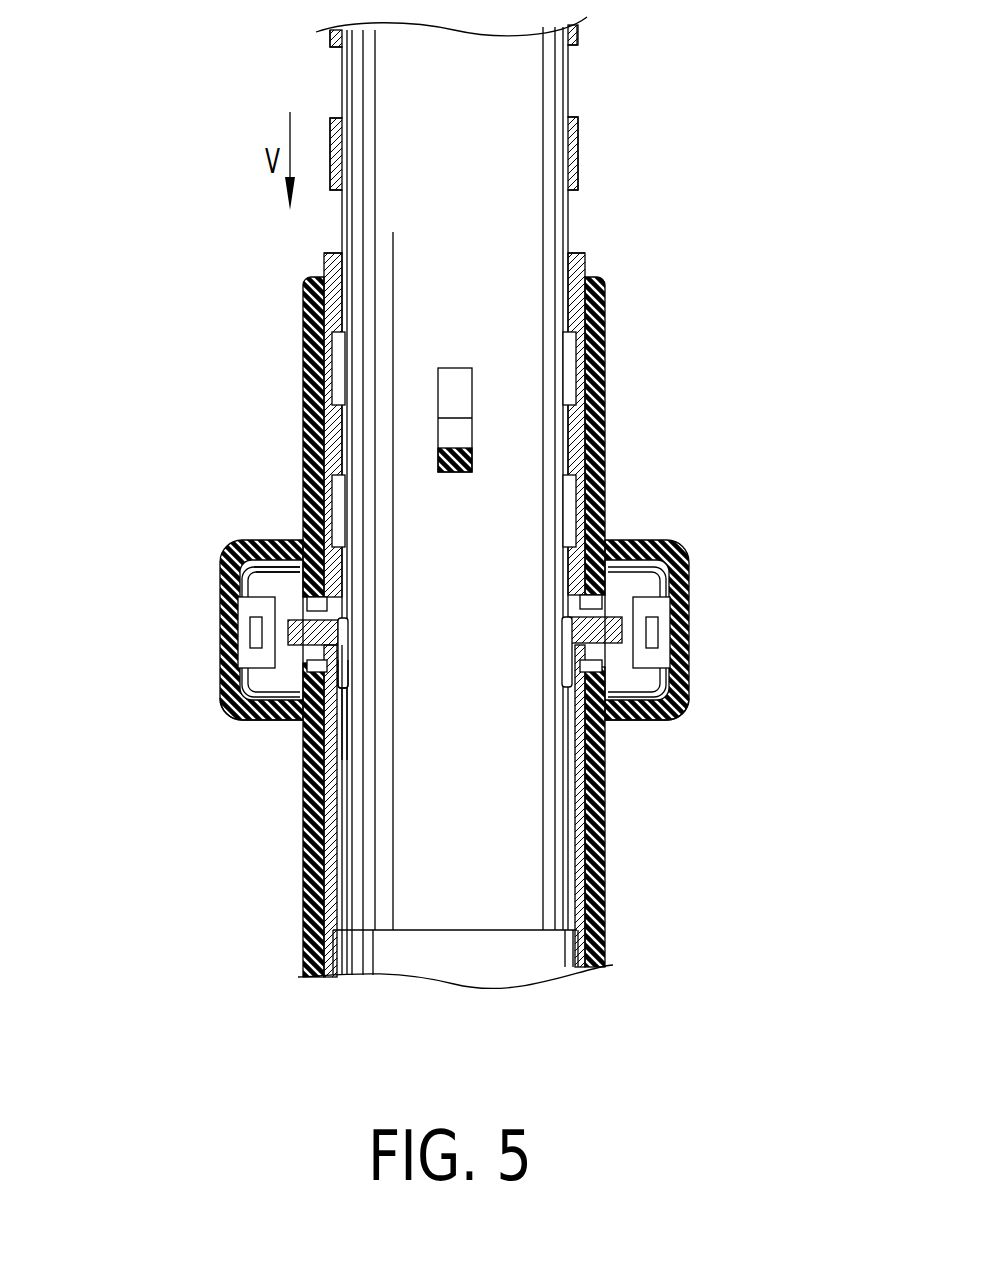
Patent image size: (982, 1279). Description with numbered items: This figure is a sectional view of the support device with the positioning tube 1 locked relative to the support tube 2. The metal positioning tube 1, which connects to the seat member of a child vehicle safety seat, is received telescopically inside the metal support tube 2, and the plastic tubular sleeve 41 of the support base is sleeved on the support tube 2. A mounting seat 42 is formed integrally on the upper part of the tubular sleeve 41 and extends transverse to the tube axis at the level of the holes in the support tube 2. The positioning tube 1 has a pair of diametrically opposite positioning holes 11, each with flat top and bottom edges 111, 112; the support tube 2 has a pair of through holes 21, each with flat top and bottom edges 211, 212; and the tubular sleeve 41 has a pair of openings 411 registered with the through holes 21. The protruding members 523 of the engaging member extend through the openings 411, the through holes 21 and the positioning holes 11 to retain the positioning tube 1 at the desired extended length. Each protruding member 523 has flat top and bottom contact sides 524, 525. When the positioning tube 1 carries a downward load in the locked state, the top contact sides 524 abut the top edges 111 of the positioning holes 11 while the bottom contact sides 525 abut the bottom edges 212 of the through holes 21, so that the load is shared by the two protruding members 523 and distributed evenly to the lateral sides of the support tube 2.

The positioning tube 1 is at (332, 110).
The support tube 2 is at (317, 253).
The positioning holes 11 is at (343, 667).
The top edge of positioning hole 111 is at (348, 625).
The bottom edge of positioning hole 112 is at (338, 683).
The through holes 21 is at (303, 585).
The top edge of through hole 211 is at (303, 542).
The bottom edge of through hole 212 is at (303, 647).
The tubular sleeve 41 is at (305, 378).
The openings 411 is at (247, 713).
The mounting seat 42 is at (647, 542).
The protruding members 523 is at (575, 633).
The top contact side 524 is at (303, 613).
The bottom contact side 525 is at (343, 660).